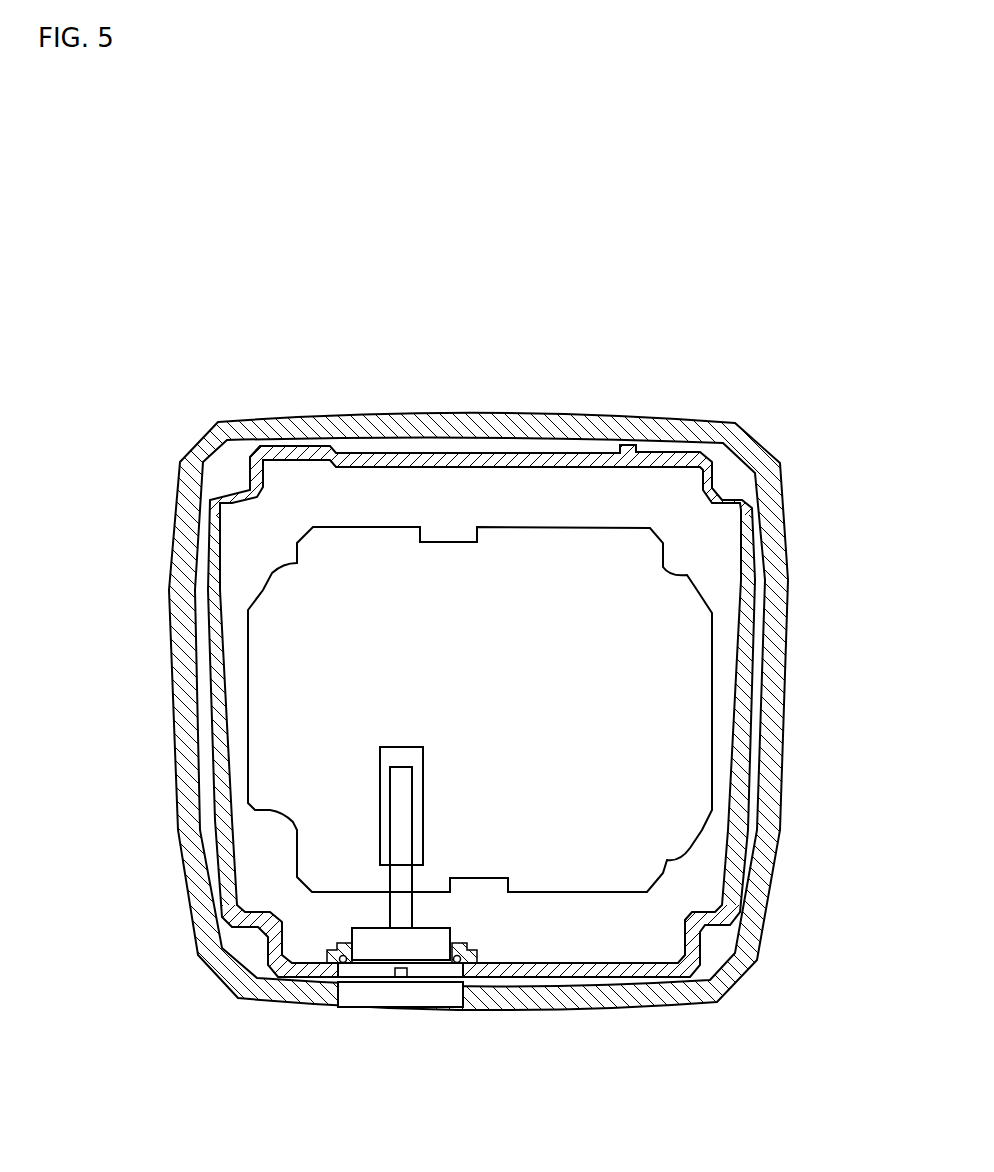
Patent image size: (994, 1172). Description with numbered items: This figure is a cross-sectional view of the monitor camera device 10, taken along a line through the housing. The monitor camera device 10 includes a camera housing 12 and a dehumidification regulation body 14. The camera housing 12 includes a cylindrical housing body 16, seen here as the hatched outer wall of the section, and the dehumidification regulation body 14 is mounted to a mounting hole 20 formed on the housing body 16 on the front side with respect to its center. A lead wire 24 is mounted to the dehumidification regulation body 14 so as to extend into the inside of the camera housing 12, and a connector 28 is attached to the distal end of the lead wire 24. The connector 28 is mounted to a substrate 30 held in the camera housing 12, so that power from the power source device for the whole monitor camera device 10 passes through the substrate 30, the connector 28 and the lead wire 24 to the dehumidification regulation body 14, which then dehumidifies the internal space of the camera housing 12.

The monitor camera device 10 is at (560, 250).
The camera housing 12 is at (424, 658).
The dehumidification regulation body 14 is at (363, 980).
The housing body 16 is at (605, 418).
The mounting hole 20 is at (345, 938).
The lead wire 24 is at (400, 848).
The connector 28 is at (380, 780).
The substrate 30 is at (270, 710).